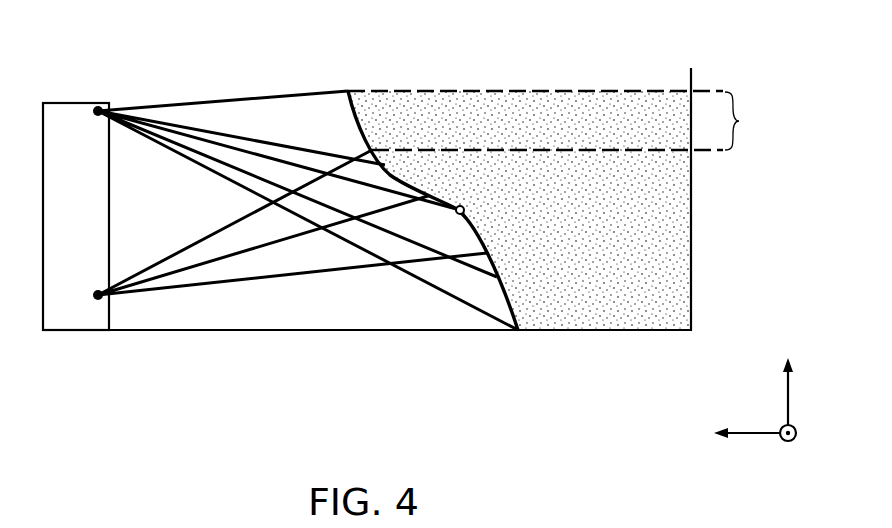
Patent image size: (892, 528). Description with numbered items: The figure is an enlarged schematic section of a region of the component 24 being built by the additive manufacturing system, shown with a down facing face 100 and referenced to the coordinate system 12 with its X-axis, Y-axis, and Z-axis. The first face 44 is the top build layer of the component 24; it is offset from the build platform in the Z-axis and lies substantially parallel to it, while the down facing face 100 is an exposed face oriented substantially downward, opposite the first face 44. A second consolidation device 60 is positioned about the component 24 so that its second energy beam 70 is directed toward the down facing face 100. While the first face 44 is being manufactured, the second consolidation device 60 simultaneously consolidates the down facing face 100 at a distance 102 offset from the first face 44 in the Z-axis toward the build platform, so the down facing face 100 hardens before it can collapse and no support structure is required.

The coordinate system 12 is at (787, 324).
The component 24 is at (545, 100).
The first face 44 is at (463, 91).
The second consolidation device 60 is at (76, 103).
The second energy beam 70 is at (212, 168).
The down facing face 100 is at (456, 214).
The distance 102 is at (568, 120).